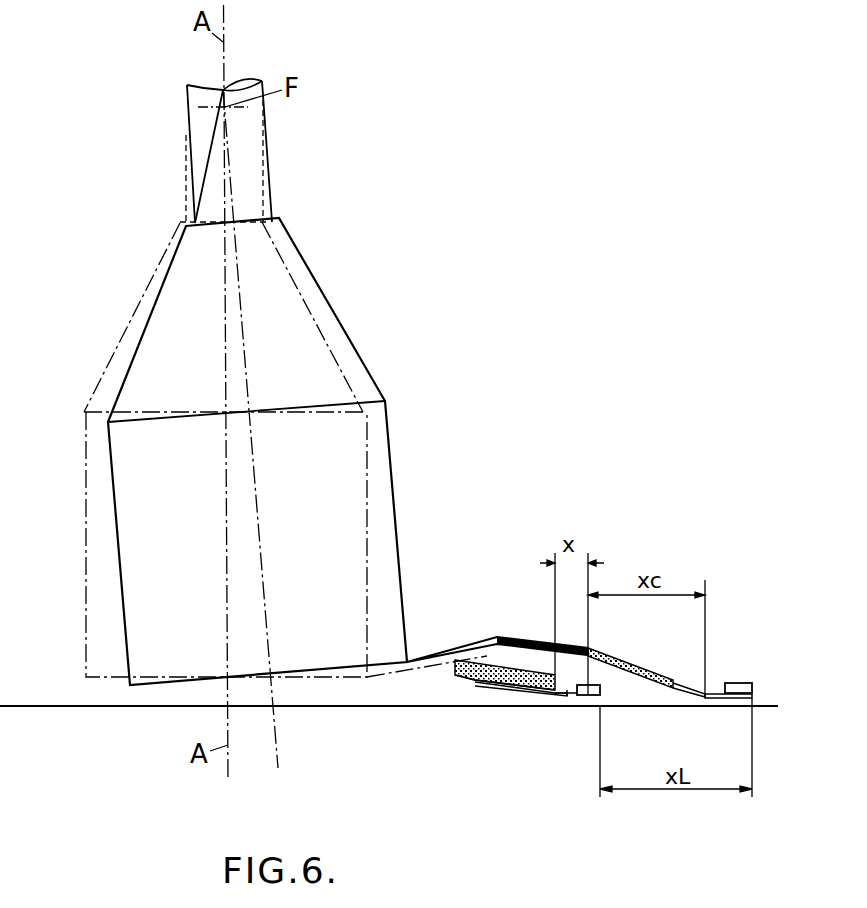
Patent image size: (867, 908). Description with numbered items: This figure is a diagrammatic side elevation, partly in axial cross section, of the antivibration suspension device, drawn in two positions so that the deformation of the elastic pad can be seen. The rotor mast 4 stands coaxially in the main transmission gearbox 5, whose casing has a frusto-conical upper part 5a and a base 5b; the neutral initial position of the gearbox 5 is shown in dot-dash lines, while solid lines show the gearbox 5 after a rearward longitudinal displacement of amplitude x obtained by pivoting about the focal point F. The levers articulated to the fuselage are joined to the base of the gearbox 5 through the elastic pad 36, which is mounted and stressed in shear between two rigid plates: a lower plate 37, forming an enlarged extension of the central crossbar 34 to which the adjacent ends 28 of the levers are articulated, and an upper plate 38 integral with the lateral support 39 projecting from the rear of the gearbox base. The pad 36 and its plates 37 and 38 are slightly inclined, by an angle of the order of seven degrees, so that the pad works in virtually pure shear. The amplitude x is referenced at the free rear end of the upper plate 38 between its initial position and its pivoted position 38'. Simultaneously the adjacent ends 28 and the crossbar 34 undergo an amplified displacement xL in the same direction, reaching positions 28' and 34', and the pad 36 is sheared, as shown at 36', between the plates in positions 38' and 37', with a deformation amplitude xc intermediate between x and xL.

The rotor mast 4 is at (253, 144).
The main transmission gearbox 5 is at (397, 418).
The frusto-conical upper part 5a is at (302, 315).
The base of the transmission gearbox 5b is at (133, 591).
The adjacent ends of the levers 28 is at (583, 724).
The displaced position of the adjacent ends 28' is at (750, 664).
The central crossbar 34 is at (555, 742).
The displaced position of the crossbar 34' is at (727, 727).
The elastic pad 36 is at (504, 723).
The deformed elastic pad 36' is at (630, 650).
The lower plate 37 is at (521, 723).
The displaced position of the lower plate 37' is at (675, 723).
The upper plate 38 is at (493, 638).
The pivoted position of the upper plate 38' is at (497, 615).
The lateral support of the gearbox 39 is at (427, 667).